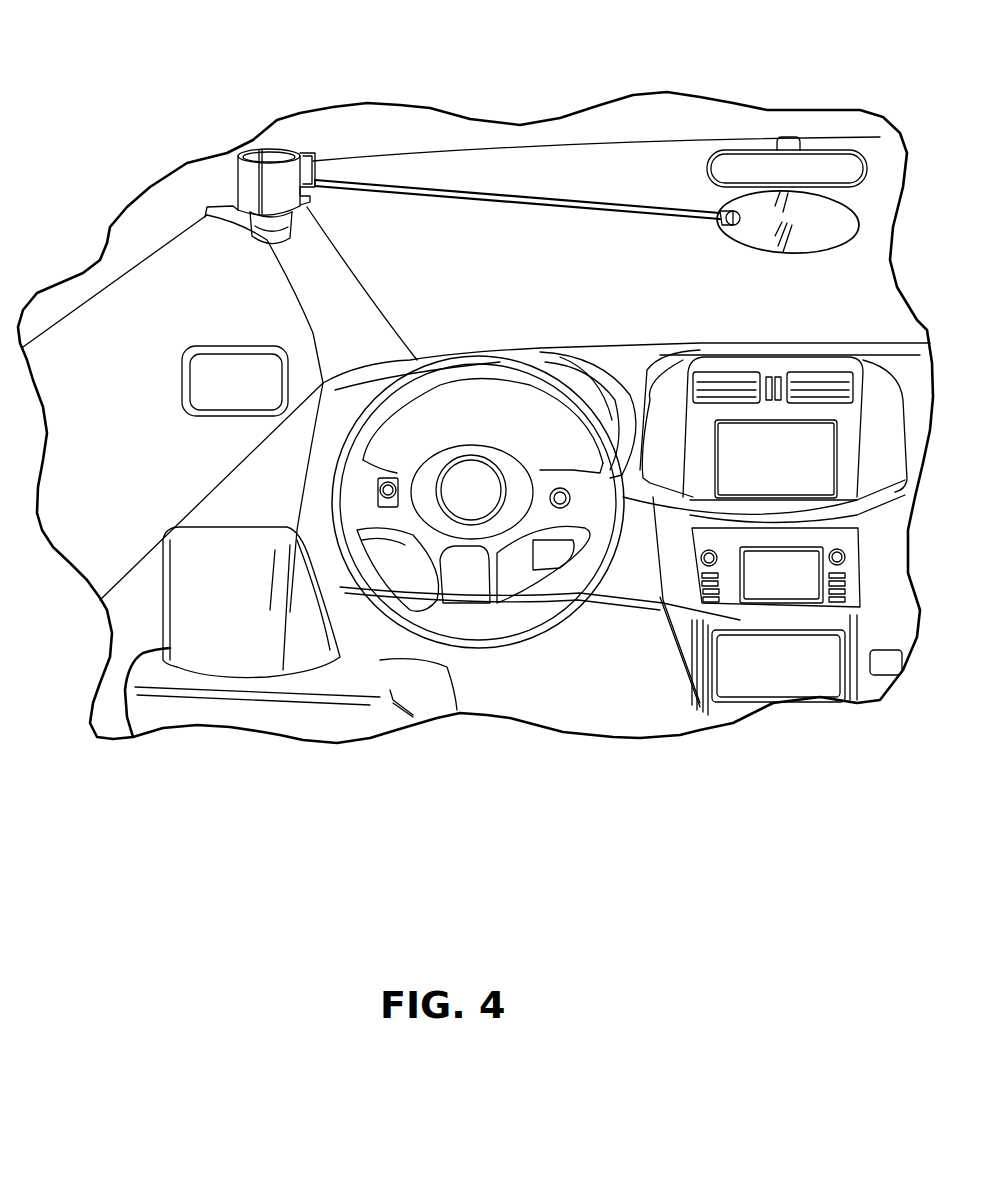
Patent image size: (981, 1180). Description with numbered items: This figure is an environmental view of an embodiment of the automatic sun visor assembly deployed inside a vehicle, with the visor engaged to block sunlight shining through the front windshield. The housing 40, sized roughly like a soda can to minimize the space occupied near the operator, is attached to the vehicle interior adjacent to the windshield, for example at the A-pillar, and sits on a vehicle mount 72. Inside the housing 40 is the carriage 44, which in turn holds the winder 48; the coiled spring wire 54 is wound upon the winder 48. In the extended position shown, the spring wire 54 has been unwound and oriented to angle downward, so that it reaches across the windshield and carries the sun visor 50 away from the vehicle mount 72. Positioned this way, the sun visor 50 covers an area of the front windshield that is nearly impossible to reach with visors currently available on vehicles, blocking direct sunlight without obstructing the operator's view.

The housing 40 is at (280, 185).
The carriage 44 is at (287, 200).
The winder 48 is at (267, 158).
The sun visor 50 is at (753, 213).
The spring wire 54 is at (423, 192).
The vehicle mount 72 is at (267, 232).